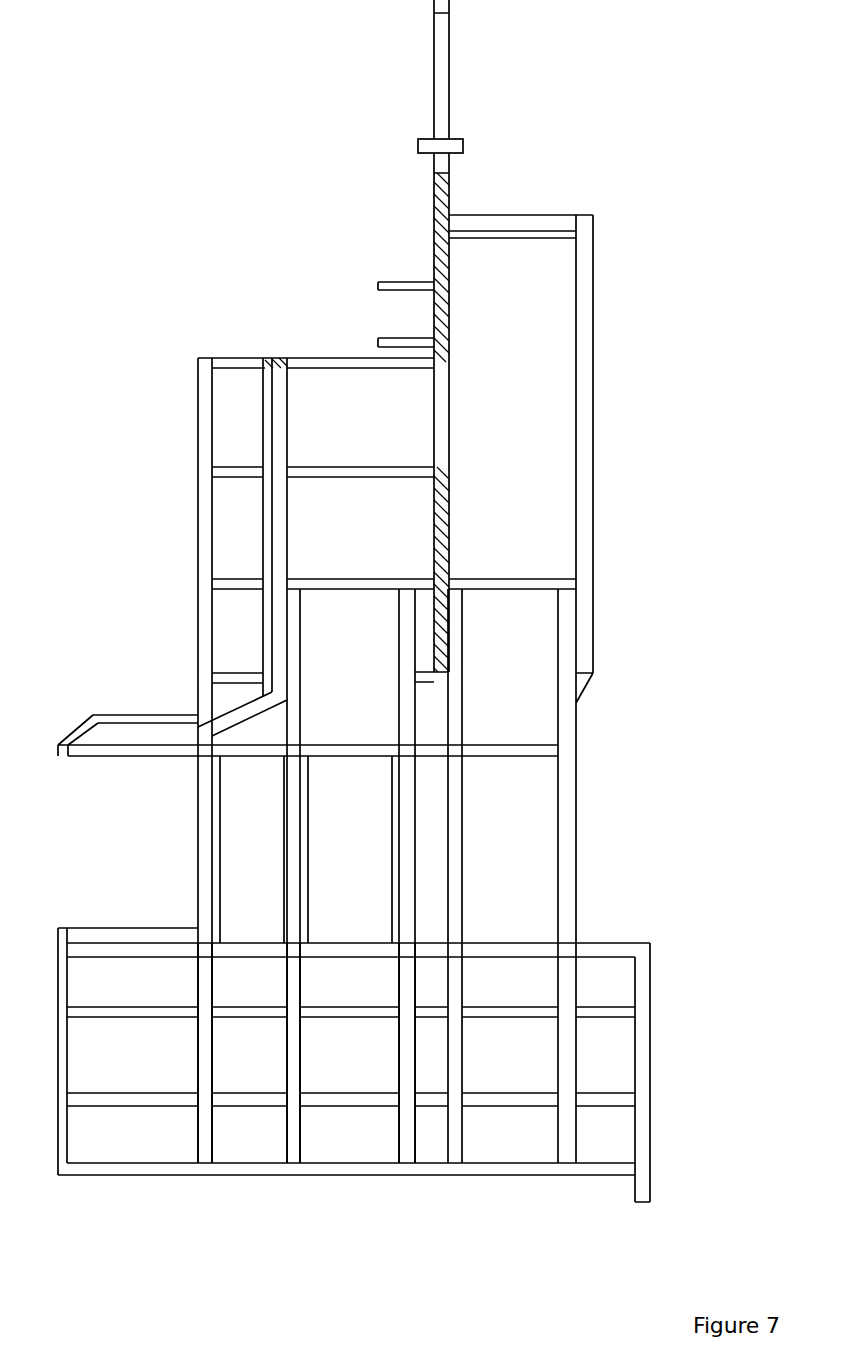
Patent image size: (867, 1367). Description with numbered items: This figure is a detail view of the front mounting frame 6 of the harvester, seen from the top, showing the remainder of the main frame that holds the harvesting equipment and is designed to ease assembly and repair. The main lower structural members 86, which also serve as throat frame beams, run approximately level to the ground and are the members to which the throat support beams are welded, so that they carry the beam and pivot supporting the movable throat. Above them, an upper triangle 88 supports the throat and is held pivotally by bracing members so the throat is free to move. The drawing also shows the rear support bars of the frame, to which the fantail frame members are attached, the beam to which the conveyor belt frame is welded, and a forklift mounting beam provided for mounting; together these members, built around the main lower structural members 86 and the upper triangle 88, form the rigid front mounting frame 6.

The frame support member 6 is at (443, 268).
The upper triangle 88 is at (505, 585).
The main lower structural members 86 is at (568, 736).